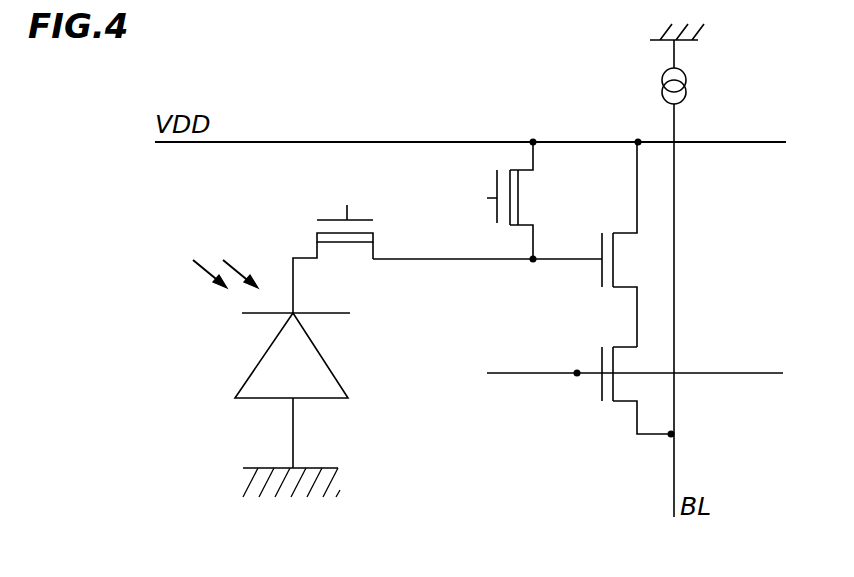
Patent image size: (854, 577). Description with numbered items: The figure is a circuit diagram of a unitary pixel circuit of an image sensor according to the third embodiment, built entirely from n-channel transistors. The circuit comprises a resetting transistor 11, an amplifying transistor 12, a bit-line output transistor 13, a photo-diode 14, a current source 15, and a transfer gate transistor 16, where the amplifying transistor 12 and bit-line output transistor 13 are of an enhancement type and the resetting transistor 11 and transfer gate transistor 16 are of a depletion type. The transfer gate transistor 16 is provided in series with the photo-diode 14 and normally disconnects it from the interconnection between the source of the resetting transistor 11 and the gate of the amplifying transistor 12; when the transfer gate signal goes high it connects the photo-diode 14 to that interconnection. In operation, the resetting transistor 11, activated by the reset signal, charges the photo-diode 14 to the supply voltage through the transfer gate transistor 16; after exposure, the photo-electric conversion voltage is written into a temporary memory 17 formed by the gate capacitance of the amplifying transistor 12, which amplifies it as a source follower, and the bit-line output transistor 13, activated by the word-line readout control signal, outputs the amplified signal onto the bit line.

The resetting transistor 11 is at (522, 202).
The amplifying transistor 12 is at (625, 261).
The bit-line output transistor 13 is at (622, 362).
The photo-diode 14 is at (252, 373).
The current source 15 is at (688, 80).
The transfer gate transistor 16 is at (349, 242).
The temporary memory 17 is at (433, 259).